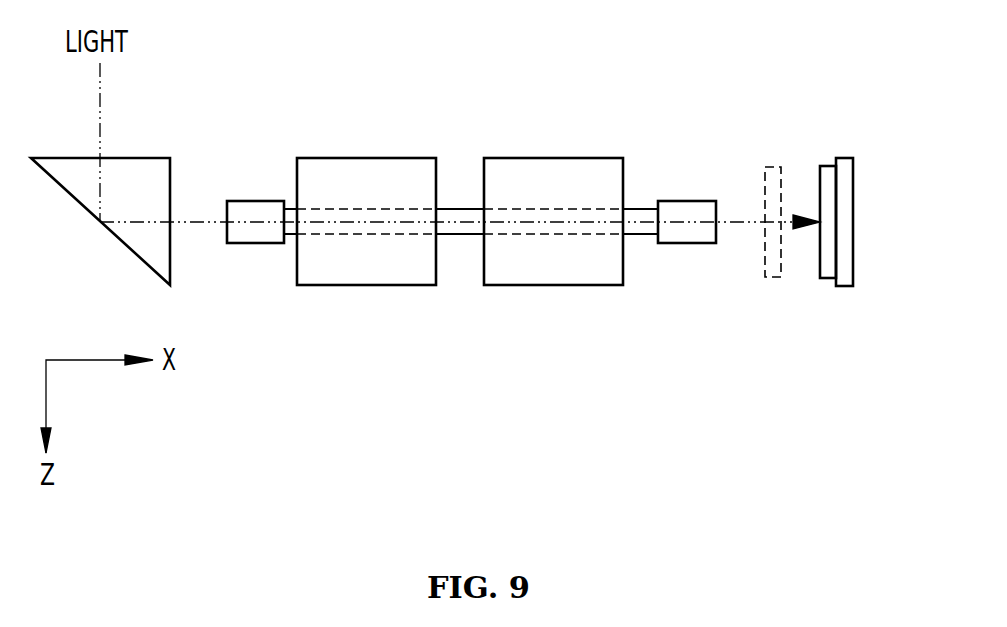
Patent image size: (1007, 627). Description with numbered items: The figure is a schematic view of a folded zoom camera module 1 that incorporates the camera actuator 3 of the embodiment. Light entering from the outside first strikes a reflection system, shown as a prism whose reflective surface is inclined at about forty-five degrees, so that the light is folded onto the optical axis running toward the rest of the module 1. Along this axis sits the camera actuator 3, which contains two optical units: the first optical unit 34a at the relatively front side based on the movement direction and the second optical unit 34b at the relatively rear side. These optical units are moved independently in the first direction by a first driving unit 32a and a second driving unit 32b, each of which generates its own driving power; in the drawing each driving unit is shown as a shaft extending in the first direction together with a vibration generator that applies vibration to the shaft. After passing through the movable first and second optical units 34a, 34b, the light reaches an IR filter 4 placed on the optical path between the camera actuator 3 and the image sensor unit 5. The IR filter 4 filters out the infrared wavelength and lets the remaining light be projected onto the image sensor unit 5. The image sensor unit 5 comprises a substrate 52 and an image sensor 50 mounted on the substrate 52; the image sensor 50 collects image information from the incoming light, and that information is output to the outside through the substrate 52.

The camera module 1 is at (153, 124).
The camera actuator 3 is at (489, 255).
The first driving unit 32a is at (331, 313).
The second driving unit 32b is at (618, 313).
The first optical unit 34a is at (390, 287).
The second optical unit 34b is at (523, 287).
The IR filter 4 is at (772, 167).
The image sensor unit 5 is at (881, 214).
The image sensor 50 is at (828, 280).
The substrate 52 is at (853, 233).